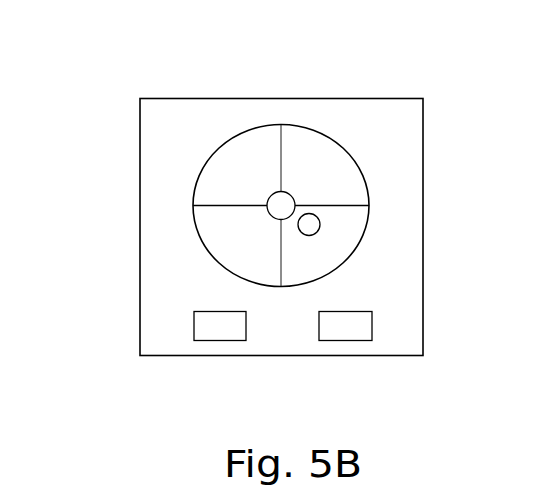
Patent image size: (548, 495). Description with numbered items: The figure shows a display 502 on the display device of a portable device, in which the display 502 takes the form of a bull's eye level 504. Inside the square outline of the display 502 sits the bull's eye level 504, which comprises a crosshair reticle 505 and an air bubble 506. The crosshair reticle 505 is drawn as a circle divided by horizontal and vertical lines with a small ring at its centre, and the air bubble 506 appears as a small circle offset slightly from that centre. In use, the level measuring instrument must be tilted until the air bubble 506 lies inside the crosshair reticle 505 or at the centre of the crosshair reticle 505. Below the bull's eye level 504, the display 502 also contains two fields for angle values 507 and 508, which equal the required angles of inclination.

The display 502 is at (112, 249).
The bull's eye level 504 is at (372, 147).
The crosshair reticle 505 is at (287, 188).
The air bubble 506 is at (318, 223).
The angle value 507 is at (217, 339).
The angle value 508 is at (345, 339).